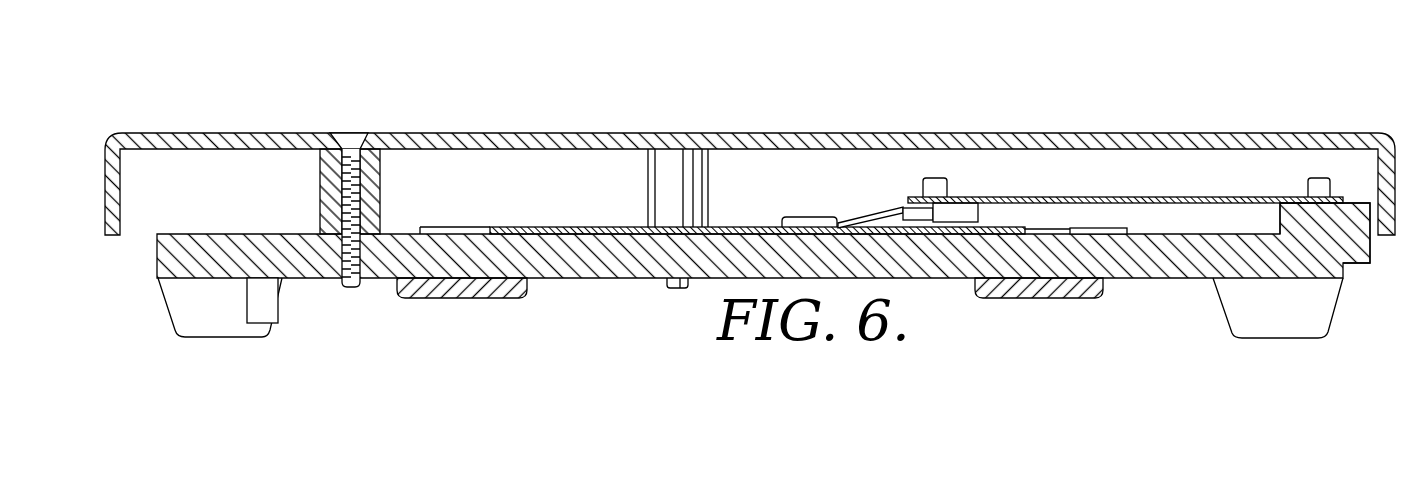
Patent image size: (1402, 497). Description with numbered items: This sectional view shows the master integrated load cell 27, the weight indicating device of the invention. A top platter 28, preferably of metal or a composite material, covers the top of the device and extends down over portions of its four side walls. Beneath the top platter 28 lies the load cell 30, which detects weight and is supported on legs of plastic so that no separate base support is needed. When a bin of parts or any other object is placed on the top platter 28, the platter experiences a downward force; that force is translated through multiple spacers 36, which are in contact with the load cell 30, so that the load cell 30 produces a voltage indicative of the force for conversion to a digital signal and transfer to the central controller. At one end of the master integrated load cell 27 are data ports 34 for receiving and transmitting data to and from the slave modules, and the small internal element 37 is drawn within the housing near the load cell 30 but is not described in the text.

The master integrated load cell 27 is at (750, 188).
The top platter 28 is at (453, 133).
The load cell 30 is at (583, 278).
The data ports 34 is at (1375, 263).
The spacers 36 is at (347, 163).
The switch lever 37 is at (880, 210).